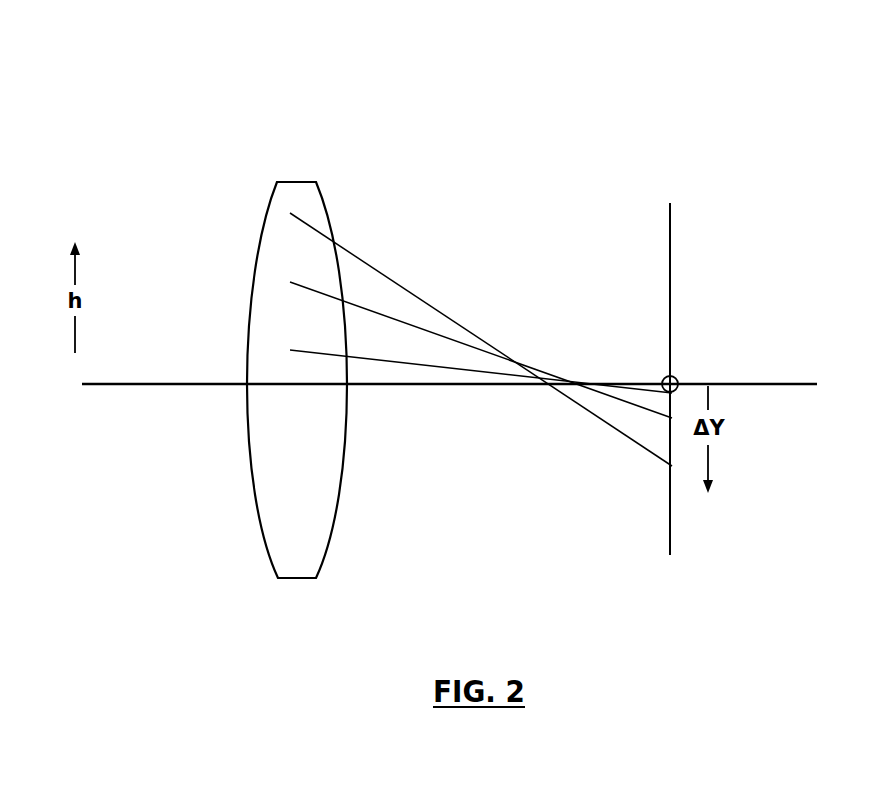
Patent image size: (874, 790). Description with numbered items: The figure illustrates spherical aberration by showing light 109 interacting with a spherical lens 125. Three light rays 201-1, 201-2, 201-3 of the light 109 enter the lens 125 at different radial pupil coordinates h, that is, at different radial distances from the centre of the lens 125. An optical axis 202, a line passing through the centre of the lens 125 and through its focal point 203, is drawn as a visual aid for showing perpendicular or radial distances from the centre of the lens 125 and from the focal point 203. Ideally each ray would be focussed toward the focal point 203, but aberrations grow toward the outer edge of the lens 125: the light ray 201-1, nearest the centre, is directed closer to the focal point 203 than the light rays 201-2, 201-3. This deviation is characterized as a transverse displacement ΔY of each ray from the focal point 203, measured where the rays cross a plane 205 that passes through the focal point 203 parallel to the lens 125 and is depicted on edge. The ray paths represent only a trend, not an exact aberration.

The light 109 is at (118, 178).
The spherical lens 125 is at (286, 182).
The light ray 201-1 is at (280, 351).
The light ray 201-2 is at (280, 284).
The light ray 201-3 is at (280, 215).
The optical axis 202 is at (801, 384).
The focal point 203 is at (677, 378).
The plane 205 is at (670, 224).